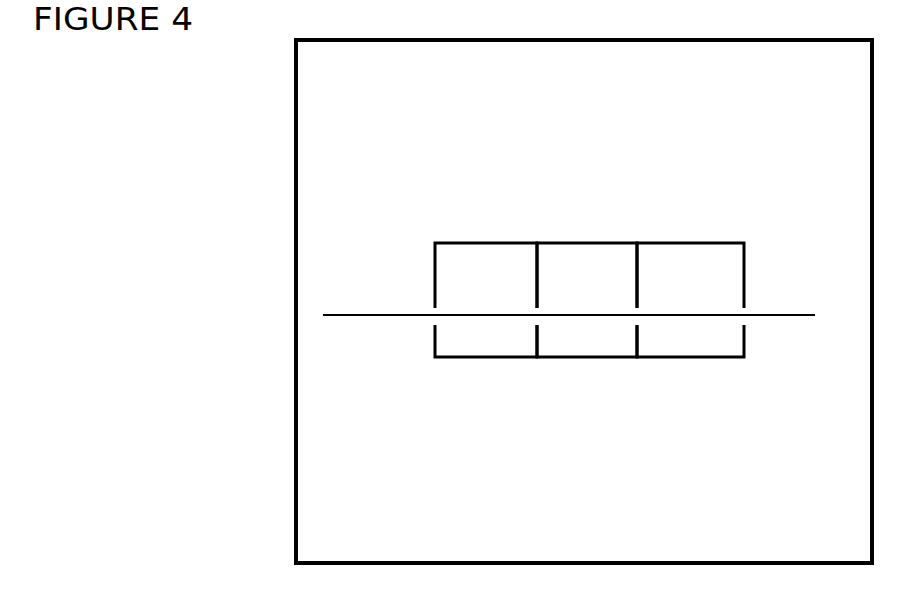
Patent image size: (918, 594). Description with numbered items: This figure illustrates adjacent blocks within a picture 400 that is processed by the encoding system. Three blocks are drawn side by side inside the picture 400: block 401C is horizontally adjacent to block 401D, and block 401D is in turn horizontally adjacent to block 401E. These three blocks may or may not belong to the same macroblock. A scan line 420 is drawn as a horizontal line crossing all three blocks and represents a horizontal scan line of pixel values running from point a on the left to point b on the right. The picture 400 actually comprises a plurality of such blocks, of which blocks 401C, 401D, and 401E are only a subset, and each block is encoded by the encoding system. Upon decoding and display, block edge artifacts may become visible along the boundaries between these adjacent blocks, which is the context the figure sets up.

The picture 400 is at (193, 245).
The block 401C is at (486, 275).
The block 401D is at (587, 275).
The block 401E is at (690, 276).
The scan line 420 is at (569, 316).